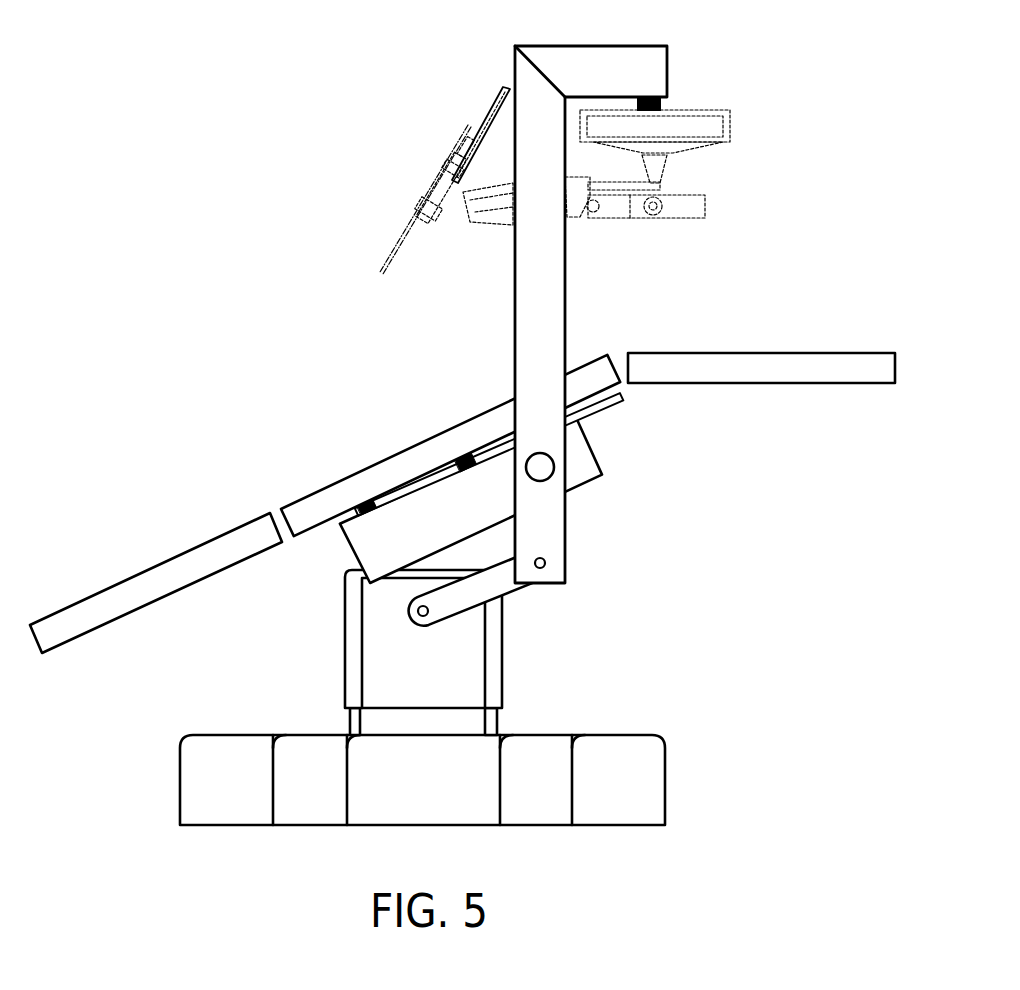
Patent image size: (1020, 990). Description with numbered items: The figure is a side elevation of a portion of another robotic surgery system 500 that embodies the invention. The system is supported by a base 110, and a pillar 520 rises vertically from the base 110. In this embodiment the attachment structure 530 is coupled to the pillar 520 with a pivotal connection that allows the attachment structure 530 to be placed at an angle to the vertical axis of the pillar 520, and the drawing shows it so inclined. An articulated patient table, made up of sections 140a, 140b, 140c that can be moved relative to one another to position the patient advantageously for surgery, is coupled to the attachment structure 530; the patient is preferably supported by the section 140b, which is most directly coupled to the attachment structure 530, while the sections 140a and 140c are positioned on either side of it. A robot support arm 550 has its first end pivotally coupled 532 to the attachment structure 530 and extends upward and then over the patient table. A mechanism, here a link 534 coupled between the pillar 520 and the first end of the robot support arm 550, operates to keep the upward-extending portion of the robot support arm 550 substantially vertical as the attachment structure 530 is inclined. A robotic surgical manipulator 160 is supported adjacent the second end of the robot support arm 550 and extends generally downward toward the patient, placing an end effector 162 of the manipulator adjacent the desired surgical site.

The robotic surgery system 500 is at (200, 213).
The base 110 is at (225, 733).
The pillar 520 is at (343, 683).
The attachment structure 530 is at (593, 445).
The pivotal coupling 532 is at (555, 467).
The link 534 is at (508, 593).
The robot support arm 550 is at (565, 342).
The patient table section 140a is at (148, 567).
The patient table section 140b is at (398, 450).
The patient table section 140c is at (762, 352).
The robotic surgical manipulator 160 is at (410, 133).
The end effector 162 is at (382, 275).